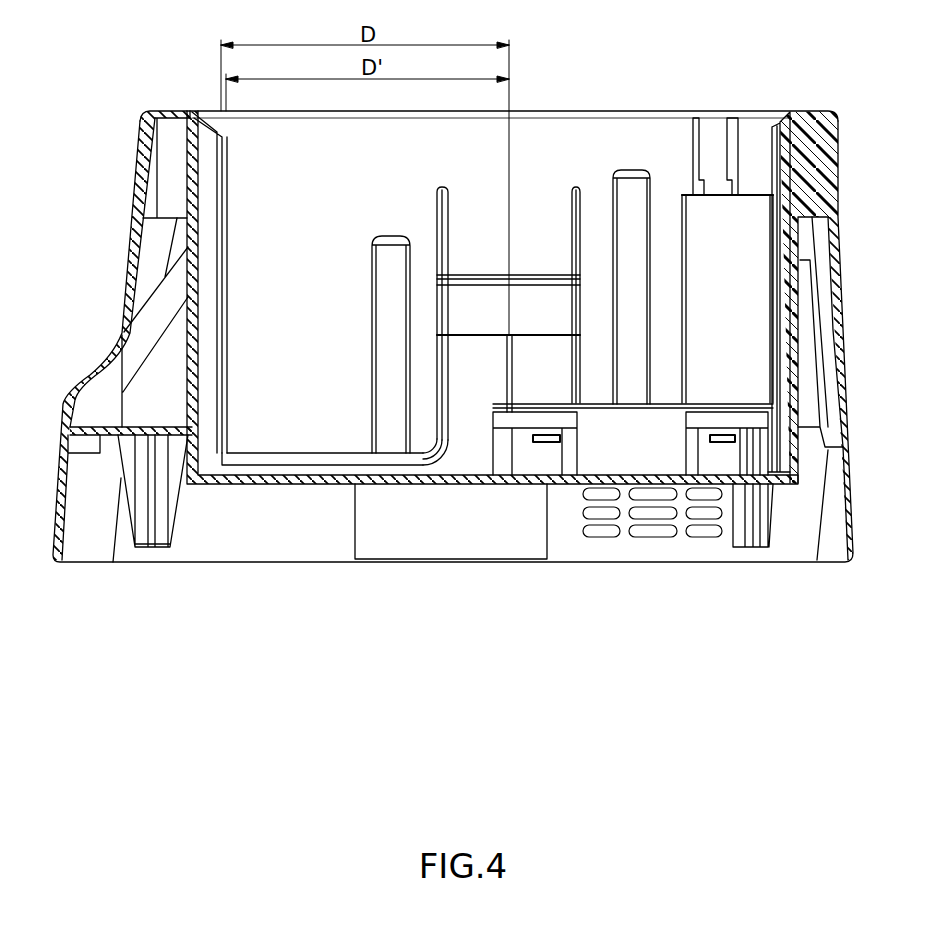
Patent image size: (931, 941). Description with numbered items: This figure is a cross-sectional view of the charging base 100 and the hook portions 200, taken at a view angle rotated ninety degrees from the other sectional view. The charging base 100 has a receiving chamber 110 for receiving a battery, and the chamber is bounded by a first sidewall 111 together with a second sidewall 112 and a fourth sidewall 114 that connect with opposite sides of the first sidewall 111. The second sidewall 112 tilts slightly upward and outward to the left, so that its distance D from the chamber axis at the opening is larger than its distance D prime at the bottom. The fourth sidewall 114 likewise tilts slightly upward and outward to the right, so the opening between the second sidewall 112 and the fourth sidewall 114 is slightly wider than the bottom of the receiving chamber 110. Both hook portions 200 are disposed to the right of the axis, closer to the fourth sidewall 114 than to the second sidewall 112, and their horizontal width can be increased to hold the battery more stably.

The charging base 100 is at (815, 110).
The receiving chamber 110 is at (552, 140).
The first sidewall 111 is at (307, 427).
The second sidewall 112 is at (208, 458).
The fourth sidewall 114 is at (769, 138).
The hook portion 200 is at (533, 463).